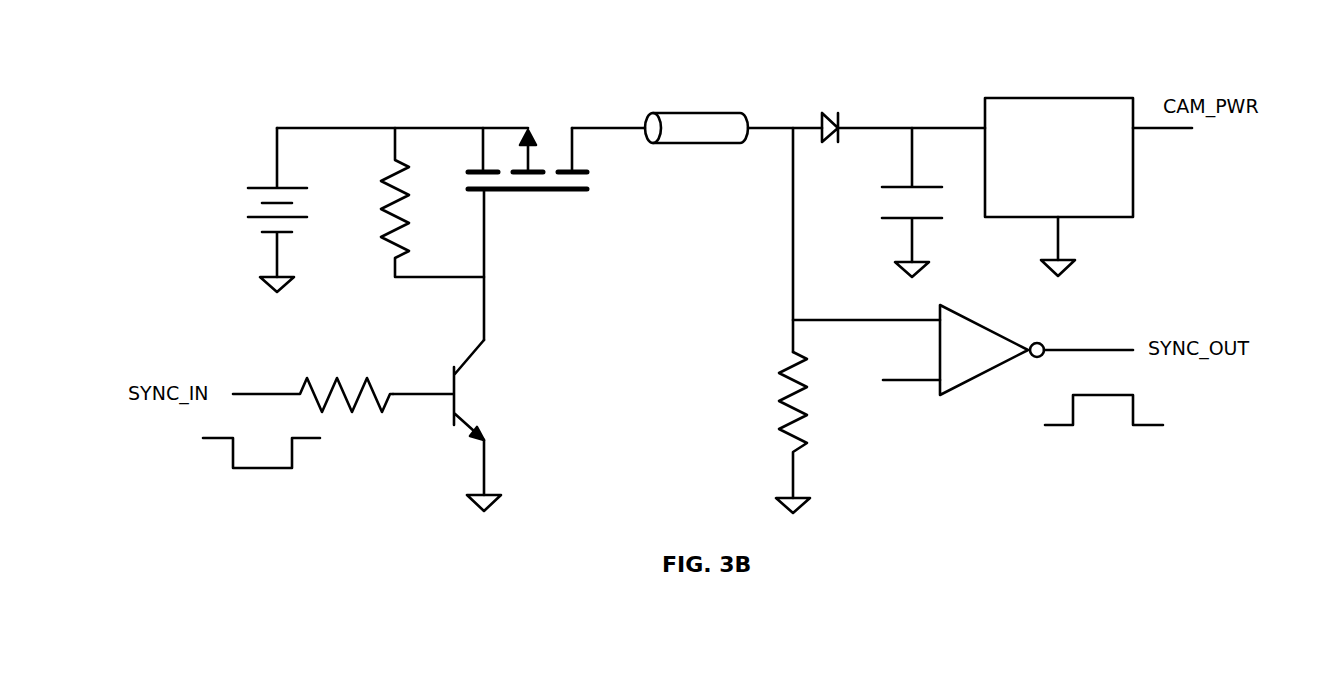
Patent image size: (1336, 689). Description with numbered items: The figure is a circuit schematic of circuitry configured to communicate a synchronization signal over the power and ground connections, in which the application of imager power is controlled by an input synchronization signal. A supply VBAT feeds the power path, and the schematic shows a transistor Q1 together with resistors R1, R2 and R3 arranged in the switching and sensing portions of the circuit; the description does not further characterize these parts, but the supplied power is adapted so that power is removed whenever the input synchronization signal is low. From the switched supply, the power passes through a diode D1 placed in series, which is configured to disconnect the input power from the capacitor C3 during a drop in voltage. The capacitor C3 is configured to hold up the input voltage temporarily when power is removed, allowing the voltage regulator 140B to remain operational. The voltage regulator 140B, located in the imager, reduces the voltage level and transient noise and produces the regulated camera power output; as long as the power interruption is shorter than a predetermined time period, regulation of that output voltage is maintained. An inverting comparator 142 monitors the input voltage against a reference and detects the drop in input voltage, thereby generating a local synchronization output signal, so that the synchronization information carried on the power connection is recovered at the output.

The voltage regulator 140B is at (1047, 98).
The inverting comparator 142 is at (978, 376).
The transistor Q1 is at (519, 296).
The resistor R1 is at (411, 202).
The resistor R2 is at (313, 373).
The resistor R3 is at (773, 432).
The capacitor C3 is at (890, 202).
The diode D1 is at (890, 112).
The battery VBAT is at (242, 210).